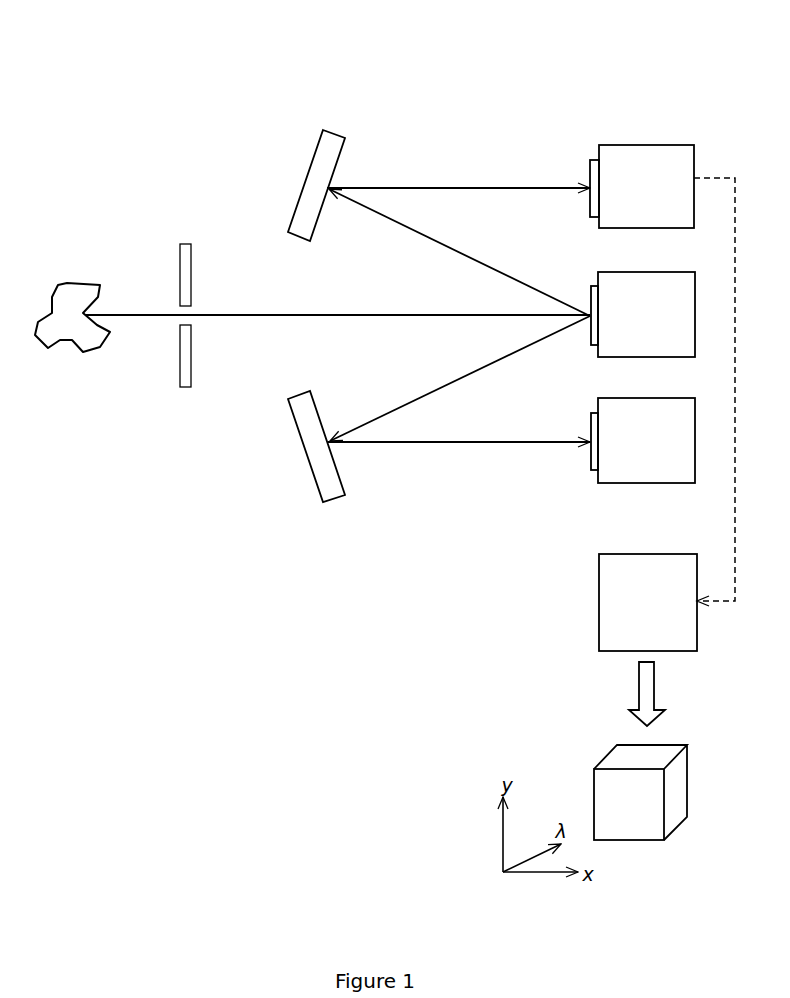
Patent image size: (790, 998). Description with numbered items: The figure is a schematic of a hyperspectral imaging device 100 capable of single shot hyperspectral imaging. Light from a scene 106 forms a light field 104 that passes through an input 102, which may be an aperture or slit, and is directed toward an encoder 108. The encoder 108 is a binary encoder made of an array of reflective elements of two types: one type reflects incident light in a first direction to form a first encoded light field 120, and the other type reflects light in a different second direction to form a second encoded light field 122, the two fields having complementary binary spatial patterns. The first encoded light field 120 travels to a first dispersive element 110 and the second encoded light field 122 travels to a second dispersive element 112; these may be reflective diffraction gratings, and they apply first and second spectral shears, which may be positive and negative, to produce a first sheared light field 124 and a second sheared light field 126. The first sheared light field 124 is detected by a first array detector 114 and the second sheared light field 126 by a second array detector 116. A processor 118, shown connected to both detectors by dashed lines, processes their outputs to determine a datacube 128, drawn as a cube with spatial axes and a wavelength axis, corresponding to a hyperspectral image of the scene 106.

The hyperspectral imaging device 100 is at (232, 119).
The input 102 is at (186, 240).
The light field 104 is at (250, 315).
The scene 106 is at (78, 283).
The encoder 108 is at (627, 320).
The first dispersive element 110 is at (343, 130).
The second dispersive element 112 is at (328, 503).
The first array detector 114 is at (627, 193).
The second array detector 116 is at (627, 446).
The processor 118 is at (629, 617).
The first encoded light field 120 is at (545, 297).
The second encoded light field 122 is at (388, 410).
The first sheared light field 124 is at (472, 188).
The second sheared light field 126 is at (560, 440).
The datacube 128 is at (638, 840).